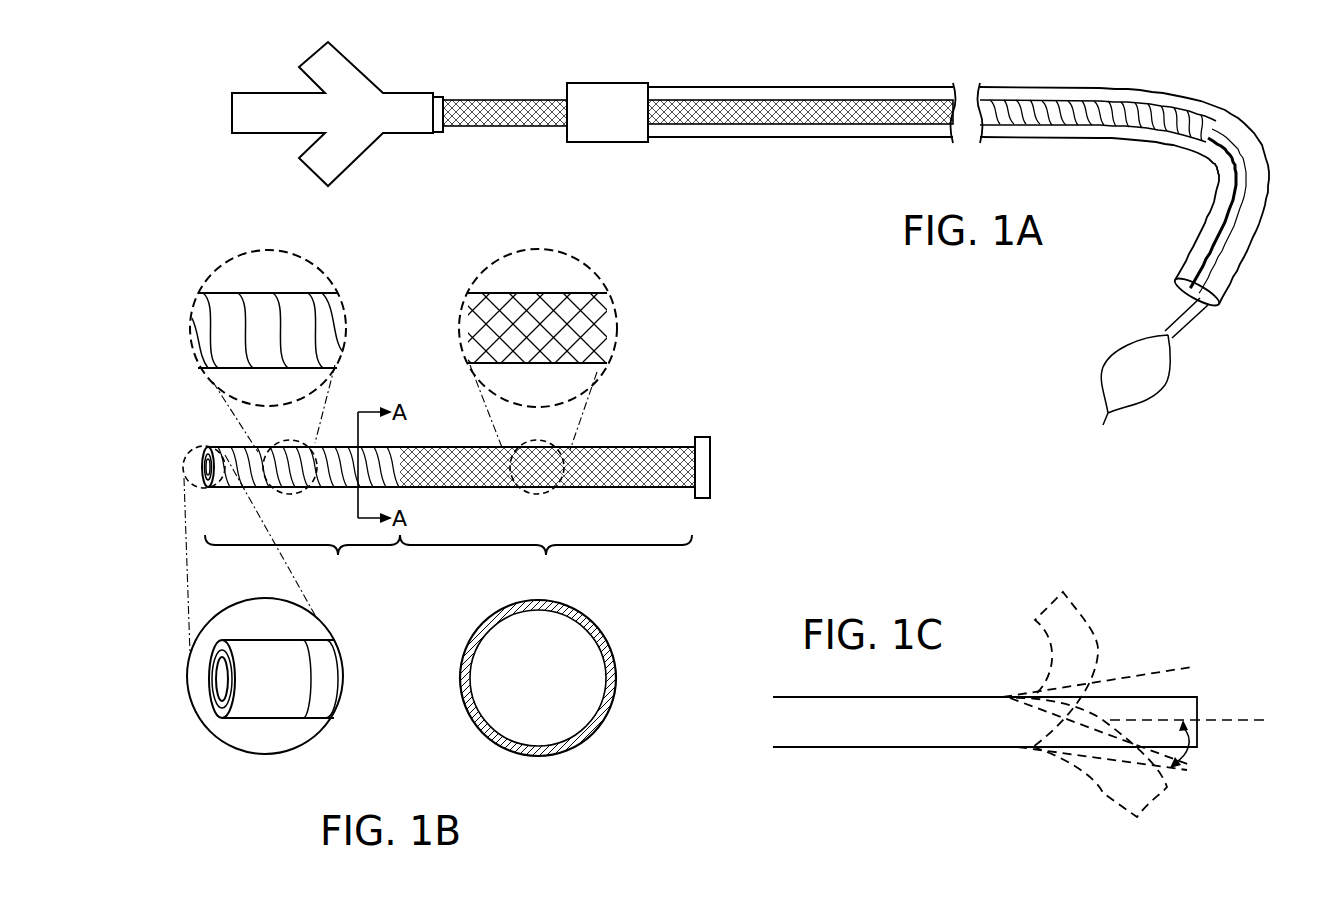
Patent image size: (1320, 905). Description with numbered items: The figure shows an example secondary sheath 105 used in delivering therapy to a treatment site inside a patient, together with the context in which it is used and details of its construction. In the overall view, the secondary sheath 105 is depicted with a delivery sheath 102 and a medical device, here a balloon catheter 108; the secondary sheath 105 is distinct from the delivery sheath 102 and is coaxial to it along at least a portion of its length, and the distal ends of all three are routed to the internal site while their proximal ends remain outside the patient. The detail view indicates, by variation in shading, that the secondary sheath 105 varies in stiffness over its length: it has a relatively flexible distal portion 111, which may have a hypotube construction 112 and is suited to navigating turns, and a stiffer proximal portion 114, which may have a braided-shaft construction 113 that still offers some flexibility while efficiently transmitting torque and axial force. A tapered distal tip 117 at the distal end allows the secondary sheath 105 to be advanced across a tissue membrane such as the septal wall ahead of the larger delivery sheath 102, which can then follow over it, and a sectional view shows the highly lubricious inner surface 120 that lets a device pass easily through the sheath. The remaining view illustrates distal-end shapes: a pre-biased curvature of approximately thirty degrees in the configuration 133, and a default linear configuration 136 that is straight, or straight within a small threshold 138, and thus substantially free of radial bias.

In FIG. 1A, the delivery sheath 102 is at (1260, 142).
In FIG. 1A, the secondary sheath 105 is at (1027, 100).
In FIG. 1C, the secondary sheath 105 is at (893, 749).
In FIG. 1A, the balloon catheter 108 is at (1103, 378).
In FIG. 1C, the balloon catheter 108 is at (1082, 617).
In FIG. 1B, the flexible distal portion 111 is at (302, 515).
In FIG. 1B, the hypotube construction 112 is at (257, 284).
In FIG. 1B, the braided-shaft construction 113 is at (517, 284).
In FIG. 1B, the stiffer proximal portion 114 is at (547, 513).
In FIG. 1B, the tapered distal tip 117 is at (253, 737).
In FIG. 1B, the inner surface 120 is at (593, 646).
In FIG. 1C, the configuration 133 is at (1110, 793).
In FIG. 1C, the configuration 136 is at (1205, 683).
In FIG. 1C, the small threshold 138 is at (1180, 750).